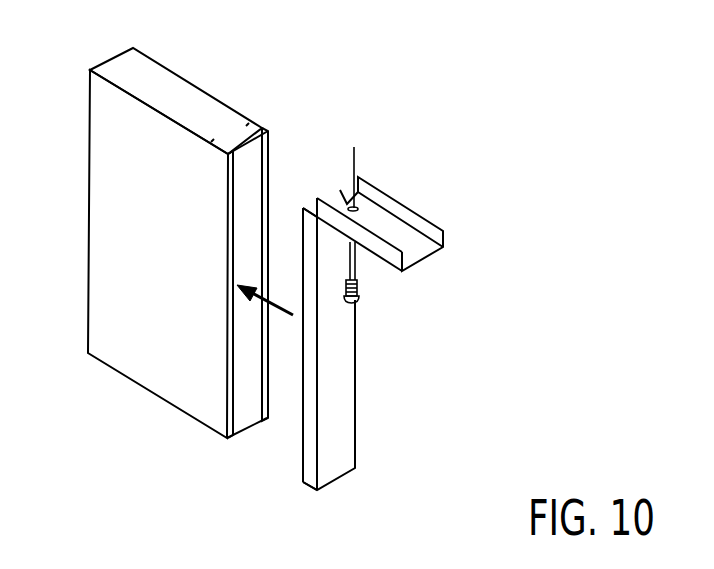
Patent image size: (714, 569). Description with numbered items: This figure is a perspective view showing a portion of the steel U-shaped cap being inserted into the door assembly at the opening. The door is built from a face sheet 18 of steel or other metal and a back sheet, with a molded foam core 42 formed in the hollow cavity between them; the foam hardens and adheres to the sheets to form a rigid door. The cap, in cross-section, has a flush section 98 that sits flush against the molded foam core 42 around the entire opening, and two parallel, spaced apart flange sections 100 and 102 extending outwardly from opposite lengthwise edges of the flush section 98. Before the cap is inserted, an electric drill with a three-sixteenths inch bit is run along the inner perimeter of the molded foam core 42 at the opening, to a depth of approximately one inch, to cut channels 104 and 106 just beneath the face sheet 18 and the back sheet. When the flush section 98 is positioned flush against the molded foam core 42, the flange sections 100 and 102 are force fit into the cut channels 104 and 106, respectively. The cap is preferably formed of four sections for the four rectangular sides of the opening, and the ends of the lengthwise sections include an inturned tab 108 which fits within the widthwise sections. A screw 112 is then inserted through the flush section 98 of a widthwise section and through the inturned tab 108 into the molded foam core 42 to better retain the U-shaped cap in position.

The face sheet 18 is at (143, 362).
The molded foam core 42 is at (110, 59).
The flush section 98 is at (338, 422).
The flange section 100 is at (297, 468).
The flange section 102 is at (340, 190).
The channel 104 is at (220, 147).
The channel 106 is at (255, 121).
The inturned tab 108 is at (406, 208).
The screw 112 is at (358, 300).